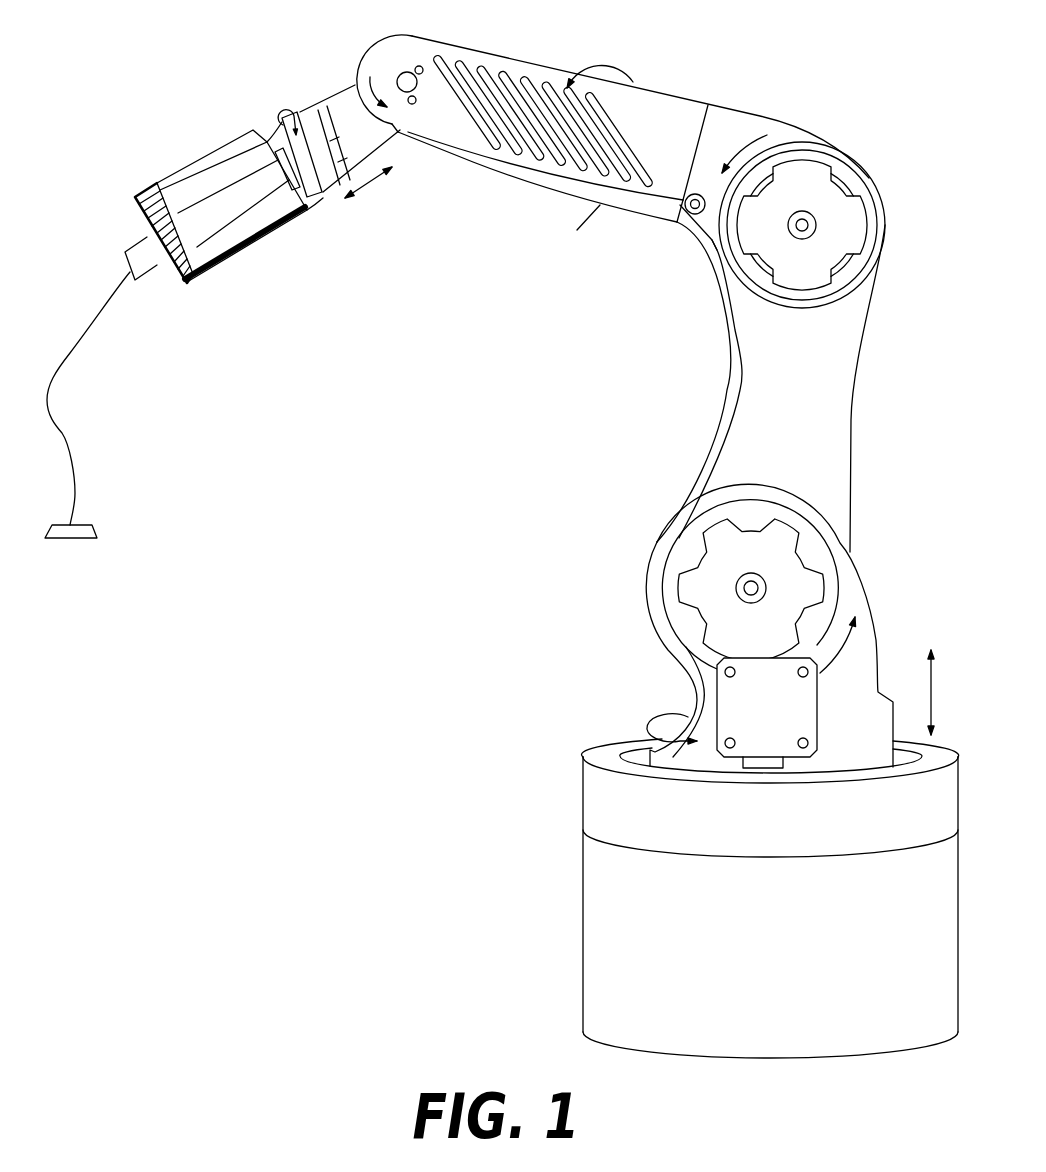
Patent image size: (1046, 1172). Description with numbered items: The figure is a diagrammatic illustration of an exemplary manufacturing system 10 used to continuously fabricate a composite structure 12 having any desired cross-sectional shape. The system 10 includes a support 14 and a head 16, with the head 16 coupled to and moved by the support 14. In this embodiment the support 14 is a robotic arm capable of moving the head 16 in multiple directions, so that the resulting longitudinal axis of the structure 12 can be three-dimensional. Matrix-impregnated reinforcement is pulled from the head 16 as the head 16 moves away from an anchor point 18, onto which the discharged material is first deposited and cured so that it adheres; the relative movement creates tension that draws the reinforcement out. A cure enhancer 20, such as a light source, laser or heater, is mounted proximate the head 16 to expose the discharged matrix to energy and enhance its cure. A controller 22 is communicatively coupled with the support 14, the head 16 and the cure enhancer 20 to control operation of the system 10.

The system 10 is at (532, 546).
The composite structure 12 is at (78, 487).
The support 14 is at (797, 448).
The head 16 is at (253, 222).
The anchor point 18 is at (63, 537).
The cure enhancer 20 is at (136, 298).
The controller 22 is at (779, 716).